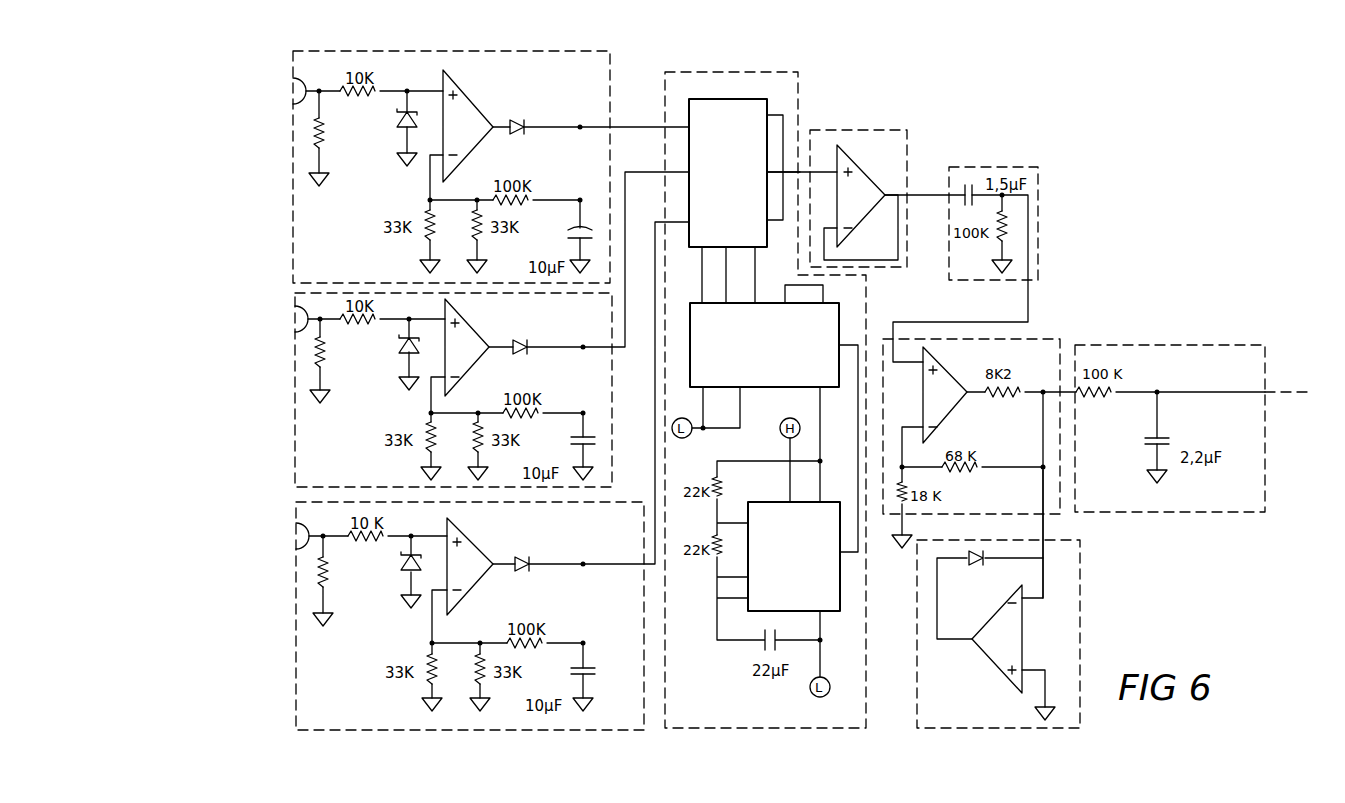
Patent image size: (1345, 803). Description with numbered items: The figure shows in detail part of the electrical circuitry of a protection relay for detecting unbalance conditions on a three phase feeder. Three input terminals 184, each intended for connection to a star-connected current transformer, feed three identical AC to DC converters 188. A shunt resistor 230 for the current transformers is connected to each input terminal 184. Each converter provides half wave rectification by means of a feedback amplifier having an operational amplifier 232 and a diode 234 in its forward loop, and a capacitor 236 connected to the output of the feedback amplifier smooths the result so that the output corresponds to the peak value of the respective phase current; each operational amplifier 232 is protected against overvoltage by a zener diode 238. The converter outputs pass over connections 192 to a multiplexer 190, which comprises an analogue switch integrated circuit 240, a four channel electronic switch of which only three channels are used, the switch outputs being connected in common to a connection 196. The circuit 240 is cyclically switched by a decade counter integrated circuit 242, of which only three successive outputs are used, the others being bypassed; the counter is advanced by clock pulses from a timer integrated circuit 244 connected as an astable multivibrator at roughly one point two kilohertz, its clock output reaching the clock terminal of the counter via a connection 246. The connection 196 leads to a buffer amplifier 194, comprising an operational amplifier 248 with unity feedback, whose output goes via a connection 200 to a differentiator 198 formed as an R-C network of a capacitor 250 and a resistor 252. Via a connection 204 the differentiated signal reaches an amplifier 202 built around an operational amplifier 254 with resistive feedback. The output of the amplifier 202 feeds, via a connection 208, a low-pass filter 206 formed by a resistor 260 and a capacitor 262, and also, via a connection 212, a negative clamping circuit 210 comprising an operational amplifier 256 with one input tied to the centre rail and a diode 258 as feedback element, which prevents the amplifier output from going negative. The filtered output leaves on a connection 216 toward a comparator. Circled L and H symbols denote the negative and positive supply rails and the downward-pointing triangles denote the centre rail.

The input terminal 184 is at (290, 100).
The AC to DC converter 188 is at (552, 30).
The multiplexer 190 is at (769, 72).
The connection 192 is at (638, 125).
The buffer amplifier 194 is at (839, 130).
The connection 196 is at (792, 168).
The differentiator 198 is at (1040, 185).
The connection 200 is at (922, 195).
The amplifier 202 is at (972, 338).
The connection 204 is at (1030, 300).
The low-pass filter 206 is at (1232, 312).
The connection 208 is at (1045, 390).
The negative clamping circuit 210 is at (1082, 652).
The connection 212 is at (1043, 528).
The connection 216 is at (1265, 392).
The shunt resistor 230 is at (320, 128).
The operational amplifier 232 is at (462, 103).
The diode 234 is at (518, 119).
The capacitor 236 is at (578, 230).
The zener diode 238 is at (418, 110).
The 4066 integrated circuit 240 is at (700, 104).
The 4017 integrated circuit 242 is at (795, 369).
The 555N integrated circuit 244 is at (834, 596).
The connection 246 is at (856, 455).
The operational amplifier 248 is at (858, 190).
The capacitor 250 is at (970, 190).
The resistor 252 is at (1003, 225).
The operational amplifier 254 is at (946, 407).
The operational amplifier 256 is at (1045, 640).
The diode 258 is at (986, 567).
The resistor 260 is at (1100, 394).
The capacitor 262 is at (1150, 448).